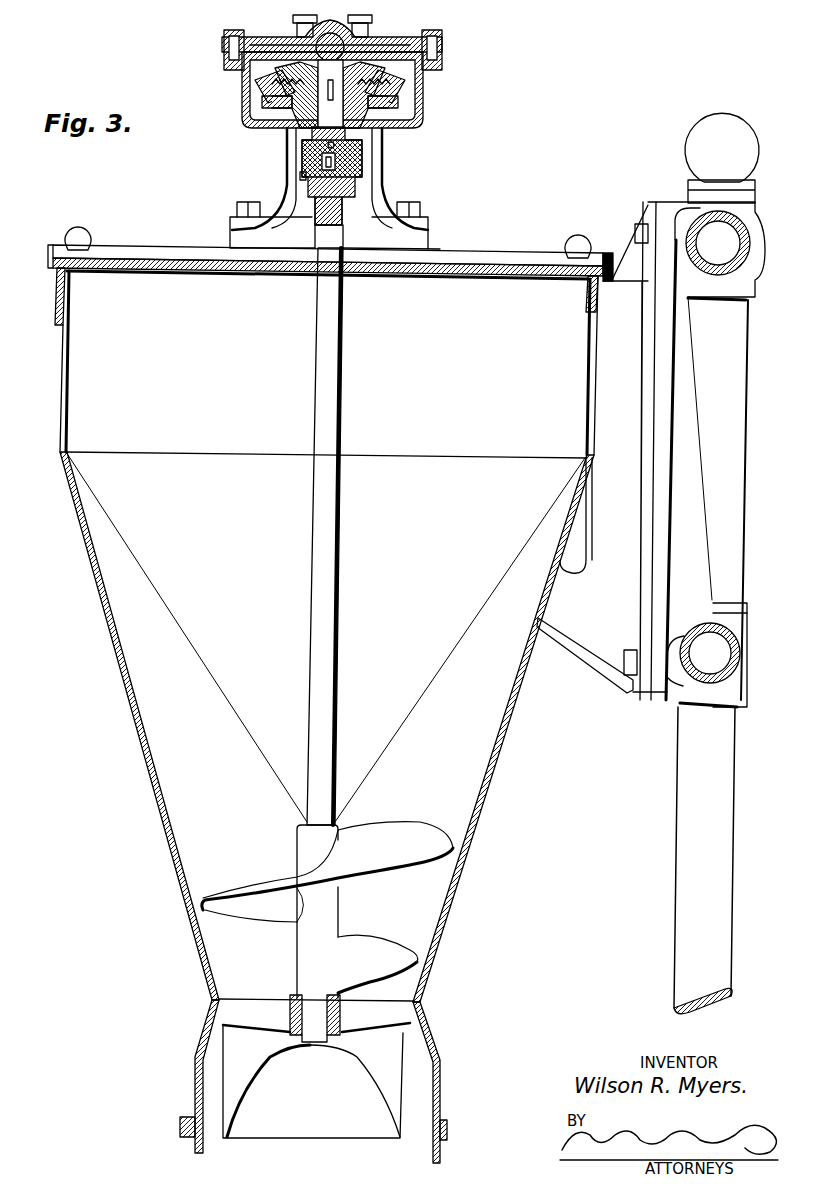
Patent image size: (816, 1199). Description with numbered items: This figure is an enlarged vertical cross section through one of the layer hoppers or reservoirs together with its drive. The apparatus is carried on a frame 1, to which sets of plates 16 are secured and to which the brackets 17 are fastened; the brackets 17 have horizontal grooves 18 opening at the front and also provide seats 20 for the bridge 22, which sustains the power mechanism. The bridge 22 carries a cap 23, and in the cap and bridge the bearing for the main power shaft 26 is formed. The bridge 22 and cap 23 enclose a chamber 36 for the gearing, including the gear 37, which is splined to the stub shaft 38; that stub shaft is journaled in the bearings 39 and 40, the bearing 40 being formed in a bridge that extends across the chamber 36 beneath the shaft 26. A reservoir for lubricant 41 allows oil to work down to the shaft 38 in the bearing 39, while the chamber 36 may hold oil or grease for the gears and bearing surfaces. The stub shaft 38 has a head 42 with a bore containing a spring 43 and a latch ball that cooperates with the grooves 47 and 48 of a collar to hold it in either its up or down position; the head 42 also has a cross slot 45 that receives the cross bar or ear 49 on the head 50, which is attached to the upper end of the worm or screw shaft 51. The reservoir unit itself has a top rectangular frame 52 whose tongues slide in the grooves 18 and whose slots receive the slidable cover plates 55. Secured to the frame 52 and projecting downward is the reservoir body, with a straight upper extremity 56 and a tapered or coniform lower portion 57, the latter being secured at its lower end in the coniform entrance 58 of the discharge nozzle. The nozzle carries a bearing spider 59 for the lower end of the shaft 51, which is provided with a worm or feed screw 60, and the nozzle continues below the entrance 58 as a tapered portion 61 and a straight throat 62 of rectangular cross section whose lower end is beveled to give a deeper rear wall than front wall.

The frame 1 is at (645, 967).
The plates 16 is at (653, 348).
The brackets 17 is at (652, 367).
The grooves 18 is at (50, 268).
The seats 20 is at (430, 250).
The bridge 22 is at (388, 203).
The cap 23 is at (395, 58).
The main power shaft 26 is at (330, 33).
The chamber 36 is at (405, 83).
The gear 37 is at (395, 104).
The stub shaft 38 is at (305, 52).
The bearing 39 is at (386, 128).
The bearing 40 is at (365, 40).
The reservoir for lubricant 41 is at (276, 130).
The head 42 is at (363, 162).
The spring 43 is at (302, 157).
The cross slot 45 is at (302, 178).
The groove 47 is at (315, 203).
The groove 48 is at (362, 146).
The cross bar or ear 49 is at (343, 203).
The head 50 is at (314, 215).
The worm or screw shaft 51 is at (338, 814).
The top rectangular frame 52 is at (56, 316).
The cover plates 55 is at (198, 276).
The upper extremity of reservoir body 56 is at (60, 340).
The lower portion of reservoir body 57 is at (508, 706).
The coniform entrance 58 is at (422, 986).
The bearing spider 59 is at (398, 1013).
The worm or feed screw 60 is at (327, 907).
The tapered portion 61 is at (247, 1090).
The straight throat 62 is at (434, 1092).